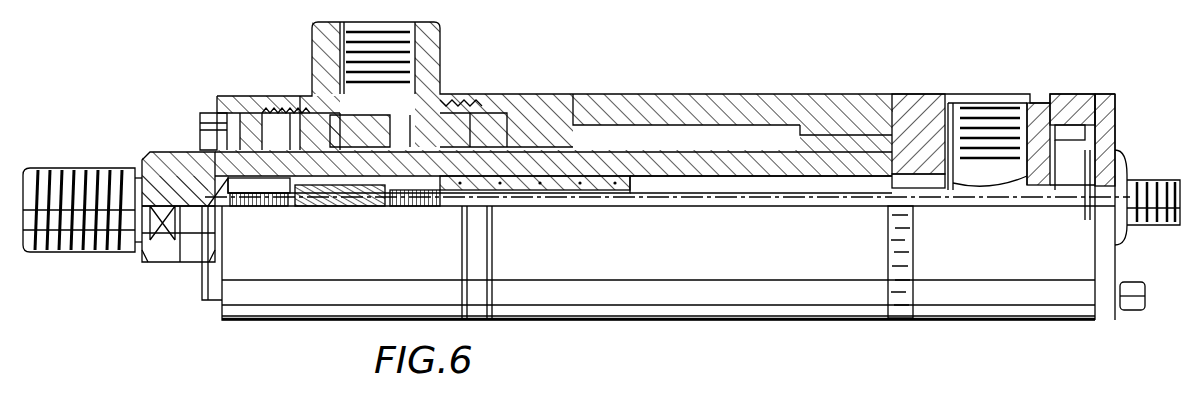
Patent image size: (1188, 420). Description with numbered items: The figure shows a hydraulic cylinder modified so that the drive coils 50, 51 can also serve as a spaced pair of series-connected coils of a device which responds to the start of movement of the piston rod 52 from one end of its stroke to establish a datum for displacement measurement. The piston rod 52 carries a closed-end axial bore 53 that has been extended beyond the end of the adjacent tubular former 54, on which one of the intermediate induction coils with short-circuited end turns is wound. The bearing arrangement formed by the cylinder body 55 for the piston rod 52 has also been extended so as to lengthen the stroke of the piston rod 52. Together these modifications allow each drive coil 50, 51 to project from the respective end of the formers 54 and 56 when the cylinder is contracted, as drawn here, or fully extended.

The drive coil 50 is at (268, 200).
The drive coil 51 is at (438, 200).
The piston rod 52 is at (160, 165).
The axial bore 53 is at (263, 185).
The tubular former 54 is at (358, 195).
The cylinder body 55 is at (783, 265).
The former 56 is at (506, 175).